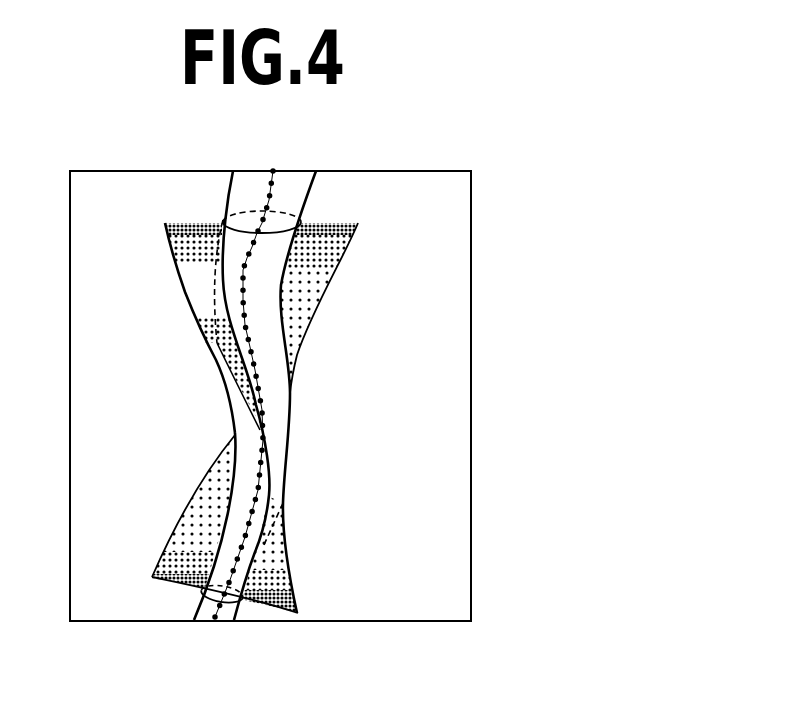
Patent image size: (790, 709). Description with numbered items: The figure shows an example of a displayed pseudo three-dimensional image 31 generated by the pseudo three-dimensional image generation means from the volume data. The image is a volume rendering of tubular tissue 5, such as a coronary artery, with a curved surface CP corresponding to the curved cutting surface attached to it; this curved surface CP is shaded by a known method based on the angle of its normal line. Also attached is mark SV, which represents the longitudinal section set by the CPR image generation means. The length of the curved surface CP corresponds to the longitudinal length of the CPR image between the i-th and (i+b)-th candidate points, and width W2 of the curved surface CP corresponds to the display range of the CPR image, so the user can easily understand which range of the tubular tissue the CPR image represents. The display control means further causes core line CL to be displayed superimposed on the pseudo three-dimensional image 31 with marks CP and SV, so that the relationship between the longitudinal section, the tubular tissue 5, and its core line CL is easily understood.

The pseudo three-dimensional image 31 is at (471, 207).
The tubular tissue 5 is at (292, 418).
The width of the curved surface W2 is at (358, 140).
The i-th candidate point Ni is at (262, 225).
The curved cutting surface mark CP is at (307, 293).
The longitudinal section mark SV is at (230, 317).
The core line CL is at (220, 608).